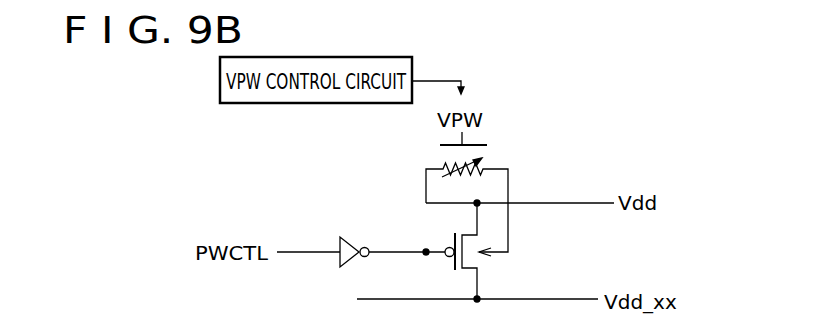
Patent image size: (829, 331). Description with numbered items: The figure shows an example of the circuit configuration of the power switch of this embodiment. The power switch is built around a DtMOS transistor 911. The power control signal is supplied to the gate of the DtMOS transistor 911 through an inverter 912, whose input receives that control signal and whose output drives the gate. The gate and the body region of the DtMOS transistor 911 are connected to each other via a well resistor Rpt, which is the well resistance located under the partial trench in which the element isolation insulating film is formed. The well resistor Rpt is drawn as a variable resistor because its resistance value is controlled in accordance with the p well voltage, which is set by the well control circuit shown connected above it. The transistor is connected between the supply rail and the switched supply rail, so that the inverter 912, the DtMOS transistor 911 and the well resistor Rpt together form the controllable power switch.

The DtMOS transistor 911 is at (484, 259).
The inverter 912 is at (341, 273).
The well resistor Rpt is at (495, 161).